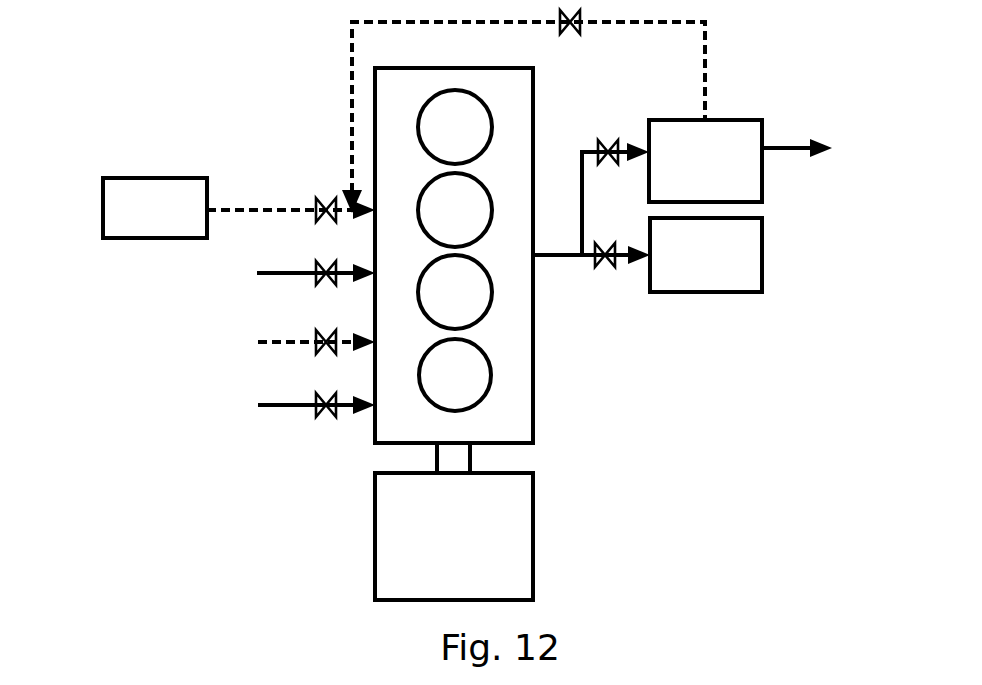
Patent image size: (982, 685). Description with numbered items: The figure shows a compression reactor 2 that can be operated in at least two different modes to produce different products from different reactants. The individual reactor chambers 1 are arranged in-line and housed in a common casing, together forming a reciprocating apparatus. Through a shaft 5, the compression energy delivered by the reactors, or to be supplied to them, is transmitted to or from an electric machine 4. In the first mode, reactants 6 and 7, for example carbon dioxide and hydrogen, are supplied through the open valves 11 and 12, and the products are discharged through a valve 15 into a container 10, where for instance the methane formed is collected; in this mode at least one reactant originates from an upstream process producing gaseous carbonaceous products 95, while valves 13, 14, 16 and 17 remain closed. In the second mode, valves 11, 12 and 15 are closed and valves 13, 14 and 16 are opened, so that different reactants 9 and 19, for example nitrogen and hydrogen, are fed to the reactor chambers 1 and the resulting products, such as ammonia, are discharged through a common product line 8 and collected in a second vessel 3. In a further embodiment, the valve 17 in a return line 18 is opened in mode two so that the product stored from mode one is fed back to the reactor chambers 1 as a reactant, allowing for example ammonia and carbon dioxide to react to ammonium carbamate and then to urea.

The reactor chamber 1 is at (472, 127).
The compression reactor 2 is at (513, 425).
The second vessel 3 is at (706, 255).
The electric machine 4 is at (490, 555).
The shaft 5 is at (463, 457).
The reactant 6 is at (291, 195).
The reactant 7 is at (310, 256).
The exhaust line 8 is at (591, 203).
The reactant 9 is at (309, 390).
The container 10 is at (740, 161).
The valve 11 is at (325, 196).
The valve 12 is at (325, 261).
The valve 13 is at (325, 330).
The valve 14 is at (325, 393).
The valve 15 is at (601, 133).
The valve 16 is at (613, 235).
The valve 17 is at (575, 50).
The recirculation line 18 is at (551, 117).
The reactant 19 is at (309, 327).
The gaseous carbonaceous products 95 is at (155, 208).